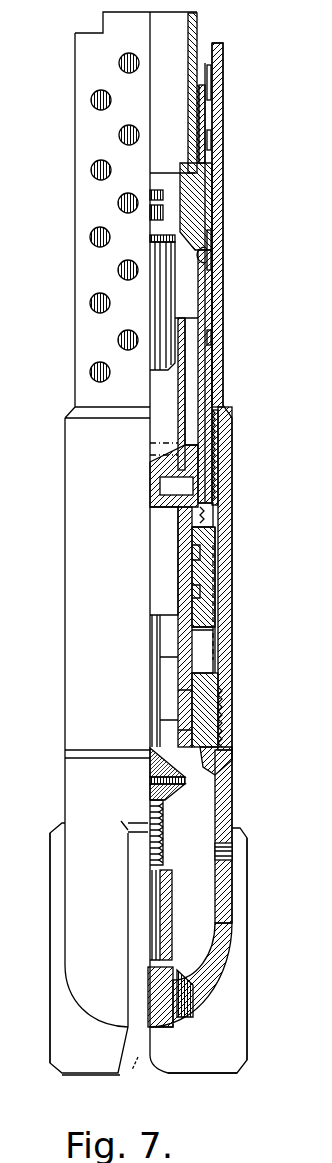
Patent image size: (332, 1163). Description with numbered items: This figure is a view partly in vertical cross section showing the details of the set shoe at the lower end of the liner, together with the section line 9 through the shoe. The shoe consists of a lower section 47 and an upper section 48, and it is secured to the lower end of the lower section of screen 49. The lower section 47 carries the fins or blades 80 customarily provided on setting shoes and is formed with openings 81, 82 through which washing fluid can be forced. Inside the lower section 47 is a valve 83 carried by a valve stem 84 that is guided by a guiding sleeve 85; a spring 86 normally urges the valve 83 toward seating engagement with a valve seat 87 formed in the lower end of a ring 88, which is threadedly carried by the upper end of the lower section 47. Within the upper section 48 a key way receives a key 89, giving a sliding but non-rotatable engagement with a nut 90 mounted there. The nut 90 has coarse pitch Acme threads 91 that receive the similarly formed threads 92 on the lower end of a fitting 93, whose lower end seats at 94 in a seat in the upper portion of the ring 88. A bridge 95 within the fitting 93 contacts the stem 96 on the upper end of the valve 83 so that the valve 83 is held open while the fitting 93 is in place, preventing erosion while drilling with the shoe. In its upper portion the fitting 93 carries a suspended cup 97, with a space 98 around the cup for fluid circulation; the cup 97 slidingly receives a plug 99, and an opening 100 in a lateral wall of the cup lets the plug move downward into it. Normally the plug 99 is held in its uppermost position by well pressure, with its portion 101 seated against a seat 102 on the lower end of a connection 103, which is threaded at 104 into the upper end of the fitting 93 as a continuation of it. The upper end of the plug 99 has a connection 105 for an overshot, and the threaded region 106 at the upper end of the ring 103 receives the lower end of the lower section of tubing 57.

The section line 9- 9 is at (150, 603).
The lower section of set shoe 47 is at (232, 958).
The upper section of set shoe 48 is at (232, 660).
The lower section of screen 49 is at (222, 298).
The lower section of tubing 57 is at (195, 63).
The fins or blades 80 is at (213, 1065).
The opening 81 is at (226, 852).
The opening 82 is at (203, 1008).
The valve 83 is at (185, 780).
The valve stem 84 is at (155, 905).
The guiding sleeve 85 is at (168, 912).
The spring 86 is at (163, 836).
The valve seat 87 is at (218, 740).
The ring 88 is at (220, 718).
The key 89 is at (215, 646).
The nut 90 is at (197, 630).
The Acme threads 91 is at (200, 572).
The threads 92 is at (195, 582).
The fitting 93 is at (213, 518).
The seat 94 is at (185, 710).
The bridge 95 is at (158, 558).
The stem 96 is at (150, 683).
The cup 97 is at (162, 425).
The space 98 is at (192, 395).
The plug 99 is at (162, 306).
The opening 100 is at (165, 455).
The portion of plug 101 is at (163, 238).
The seat 102 is at (185, 262).
The connection 103 is at (200, 193).
The threads 104 is at (205, 230).
The connection for overshot 105 is at (170, 192).
The threads 106 is at (196, 122).